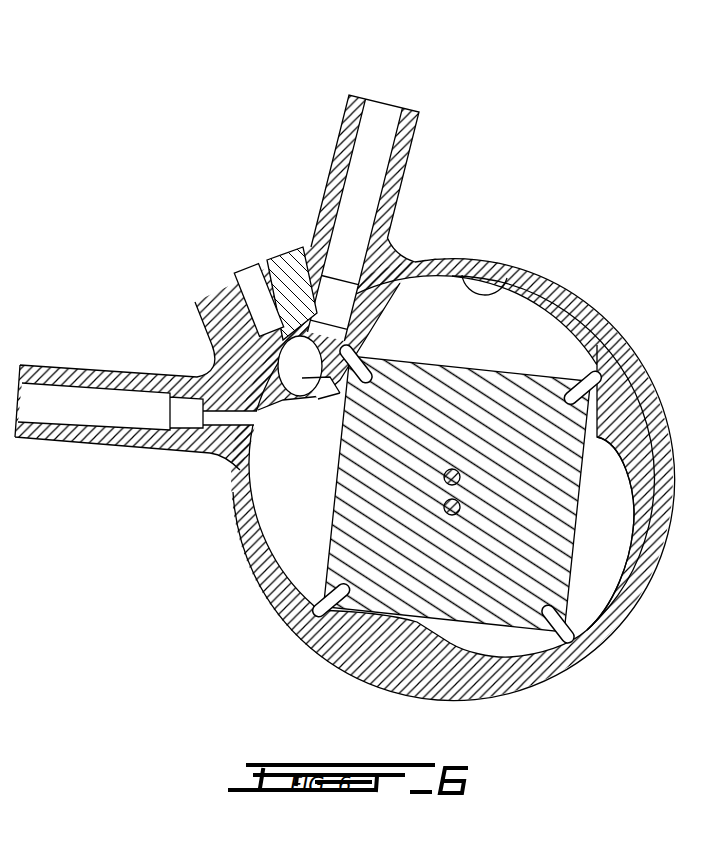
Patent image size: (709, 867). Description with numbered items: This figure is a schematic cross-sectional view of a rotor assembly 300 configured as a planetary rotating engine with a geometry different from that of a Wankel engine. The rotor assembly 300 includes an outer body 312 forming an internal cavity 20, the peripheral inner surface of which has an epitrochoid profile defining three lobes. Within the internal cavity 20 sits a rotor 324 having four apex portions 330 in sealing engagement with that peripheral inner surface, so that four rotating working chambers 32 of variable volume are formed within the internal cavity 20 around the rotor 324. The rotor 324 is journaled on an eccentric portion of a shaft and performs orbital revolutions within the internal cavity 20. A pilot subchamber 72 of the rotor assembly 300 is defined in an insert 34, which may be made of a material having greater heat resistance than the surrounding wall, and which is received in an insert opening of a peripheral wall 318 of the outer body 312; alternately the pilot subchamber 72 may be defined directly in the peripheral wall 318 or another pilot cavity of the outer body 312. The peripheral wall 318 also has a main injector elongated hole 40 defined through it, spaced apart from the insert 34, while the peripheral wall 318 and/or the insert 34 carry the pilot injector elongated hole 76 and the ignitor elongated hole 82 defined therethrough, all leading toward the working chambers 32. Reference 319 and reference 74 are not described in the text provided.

The rotor assembly 300 is at (84, 163).
The outer body 312 is at (268, 605).
The peripheral wall 318 is at (243, 522).
The inner surface recess 319 is at (517, 273).
The apex portions 330 is at (622, 337).
The rotor 324 is at (643, 403).
The pilot injector elongated hole 76 is at (382, 118).
The main injector elongated hole 40 is at (55, 397).
The ignitor elongated hole 82 is at (252, 293).
The insert 34 is at (273, 273).
The pilot subchamber 72 is at (303, 357).
The corner seal 74 is at (445, 365).
The internal cavity 20 is at (608, 512).
The working chambers 32 is at (593, 568).